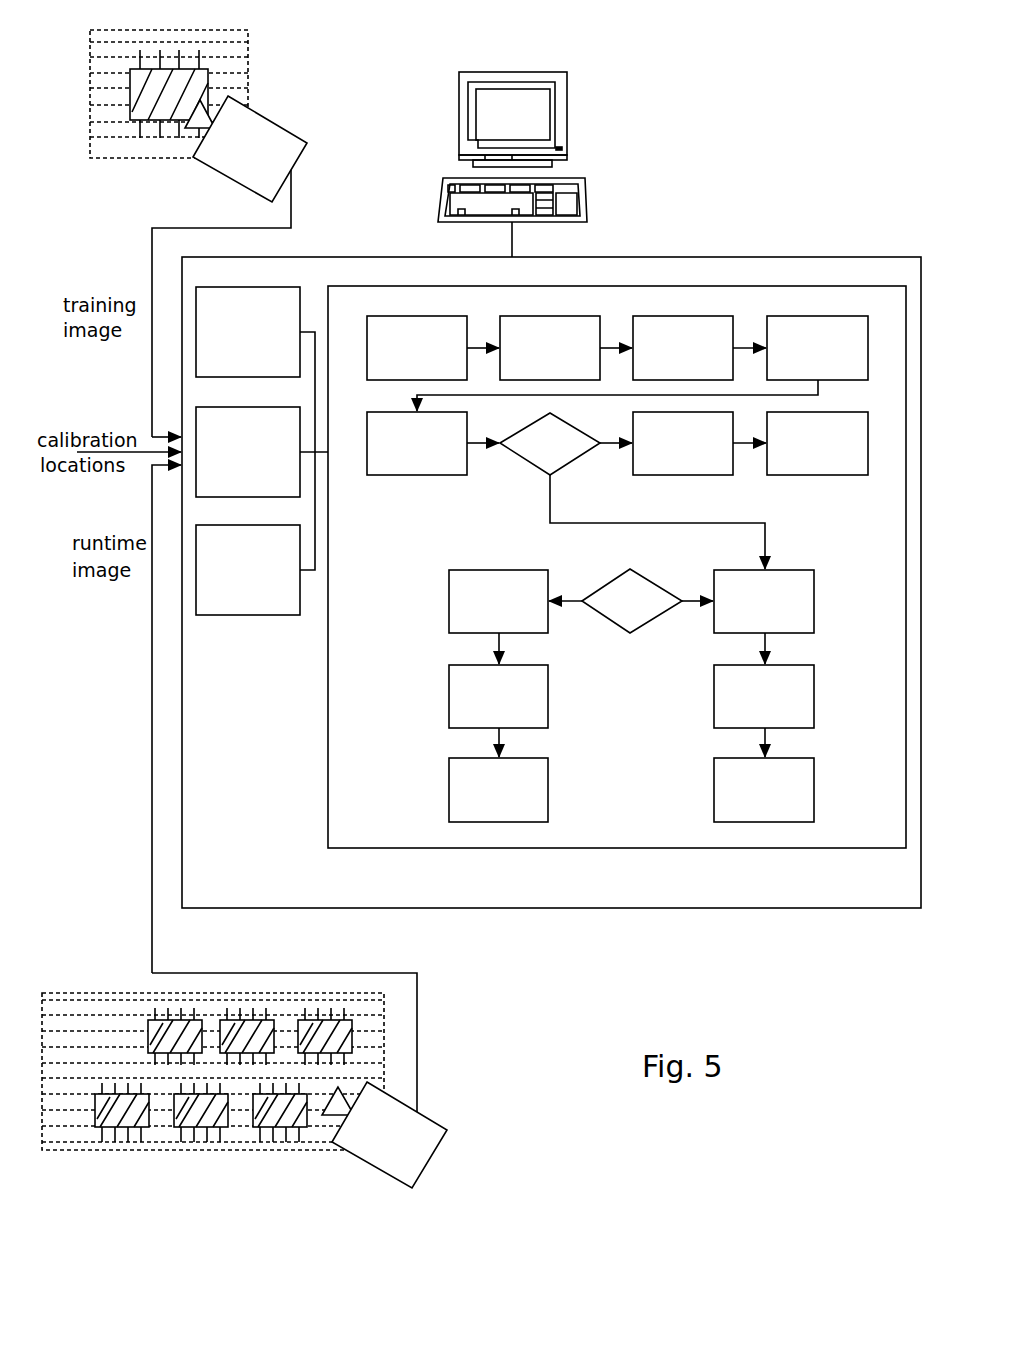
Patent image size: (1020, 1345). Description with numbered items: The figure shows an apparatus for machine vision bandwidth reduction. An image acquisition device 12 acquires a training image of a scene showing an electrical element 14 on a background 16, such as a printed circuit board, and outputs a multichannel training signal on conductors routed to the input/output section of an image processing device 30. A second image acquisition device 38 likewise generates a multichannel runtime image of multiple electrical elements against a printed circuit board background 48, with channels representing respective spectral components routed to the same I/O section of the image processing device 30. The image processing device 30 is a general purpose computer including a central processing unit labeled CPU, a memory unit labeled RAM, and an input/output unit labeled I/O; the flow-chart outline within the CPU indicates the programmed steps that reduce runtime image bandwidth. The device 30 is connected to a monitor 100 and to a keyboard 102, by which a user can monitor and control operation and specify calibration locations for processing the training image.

The image acquisition device 12 is at (295, 133).
The electrical element 14 is at (210, 83).
The background 16 is at (202, 125).
The image processing device 30 is at (678, 267).
The image acquisition device 38 is at (425, 1127).
The runtime circuit board 48 is at (70, 1005).
The monitor 100 is at (543, 105).
The keyboard 102 is at (567, 188).